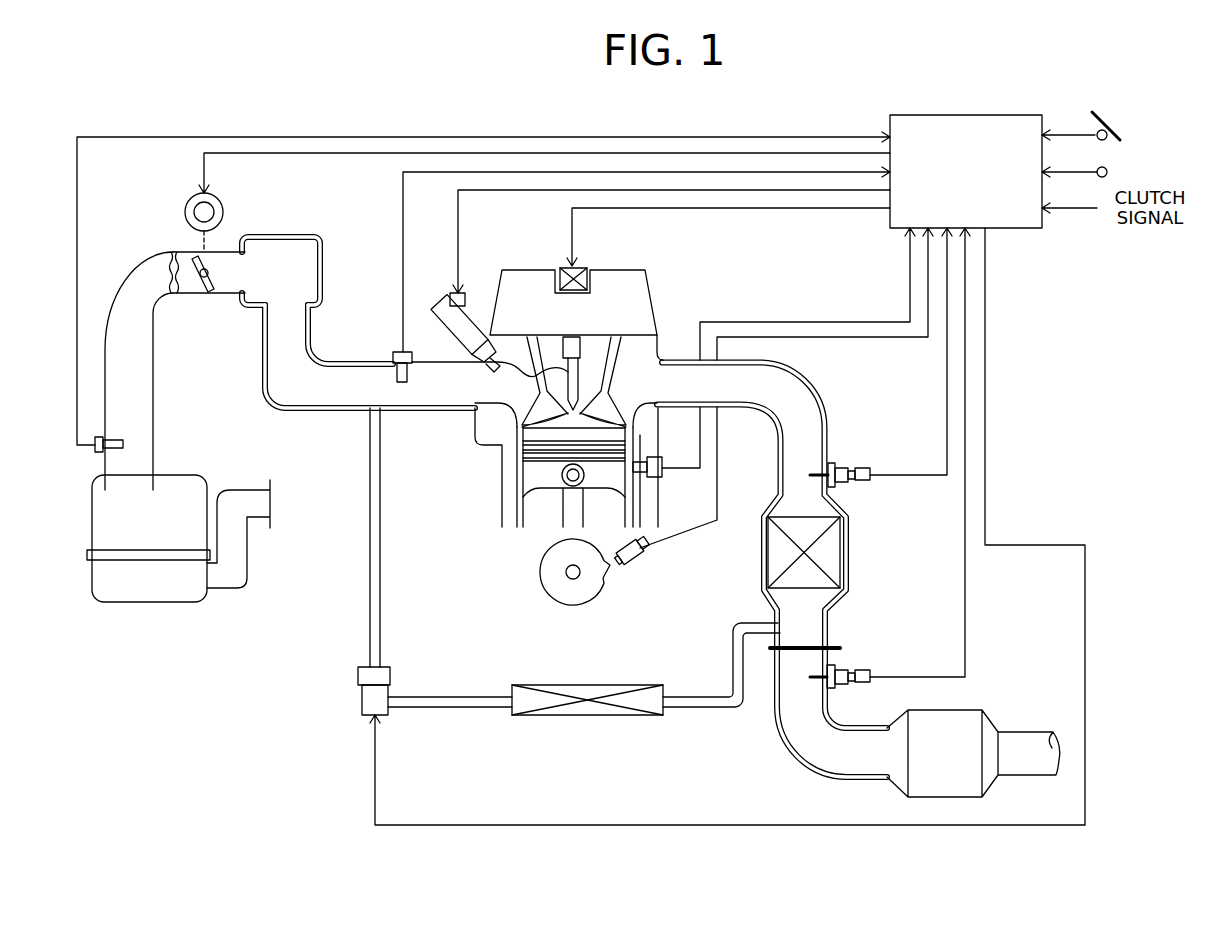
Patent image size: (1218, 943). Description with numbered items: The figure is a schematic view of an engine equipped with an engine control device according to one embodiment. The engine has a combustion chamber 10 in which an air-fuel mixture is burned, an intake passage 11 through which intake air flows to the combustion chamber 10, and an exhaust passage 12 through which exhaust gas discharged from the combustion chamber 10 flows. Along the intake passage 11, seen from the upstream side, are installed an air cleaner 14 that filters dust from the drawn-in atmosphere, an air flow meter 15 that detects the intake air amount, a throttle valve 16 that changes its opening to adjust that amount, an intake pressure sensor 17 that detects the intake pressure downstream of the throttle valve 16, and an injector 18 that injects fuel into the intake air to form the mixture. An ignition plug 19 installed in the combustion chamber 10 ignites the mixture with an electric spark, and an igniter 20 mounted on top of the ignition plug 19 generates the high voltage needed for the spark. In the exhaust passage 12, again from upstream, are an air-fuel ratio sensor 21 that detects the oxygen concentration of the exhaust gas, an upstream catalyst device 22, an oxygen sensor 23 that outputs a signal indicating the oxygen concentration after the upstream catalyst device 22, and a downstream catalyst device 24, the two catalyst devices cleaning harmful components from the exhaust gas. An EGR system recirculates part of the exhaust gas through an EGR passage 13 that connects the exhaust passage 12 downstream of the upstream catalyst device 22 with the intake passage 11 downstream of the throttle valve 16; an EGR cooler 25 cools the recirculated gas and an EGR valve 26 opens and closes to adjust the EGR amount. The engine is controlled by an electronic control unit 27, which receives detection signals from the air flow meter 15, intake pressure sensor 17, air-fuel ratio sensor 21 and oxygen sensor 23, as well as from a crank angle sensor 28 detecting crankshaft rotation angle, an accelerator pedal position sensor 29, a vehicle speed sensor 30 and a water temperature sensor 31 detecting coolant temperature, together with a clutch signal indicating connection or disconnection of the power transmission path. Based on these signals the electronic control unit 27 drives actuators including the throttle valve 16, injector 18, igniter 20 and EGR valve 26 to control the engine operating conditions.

The combustion chamber 10 is at (556, 430).
The intake passage 11 is at (153, 365).
The exhaust passage 12 is at (792, 373).
The EGR passage 13 is at (458, 690).
The air cleaner 14 is at (185, 603).
The air flow meter 15 is at (118, 440).
The throttle valve 16 is at (210, 275).
The intake pressure sensor 17 is at (412, 372).
The injector 18 is at (455, 333).
The ignition plug 19 is at (538, 374).
The igniter 20 is at (566, 262).
The air-fuel ratio sensor 21 is at (860, 465).
The upstream catalyst device 22 is at (849, 545).
The oxygen sensor 23 is at (857, 668).
The downstream catalyst device 24 is at (972, 710).
The EGR cooler 25 is at (640, 685).
The EGR valve 26 is at (358, 700).
The electronic control unit 27 is at (950, 115).
The crank angle sensor 28 is at (629, 565).
The accelerator pedal position sensor 29 is at (1120, 125).
The vehicle speed sensor 30 is at (1108, 171).
The water temperature sensor 31 is at (659, 481).